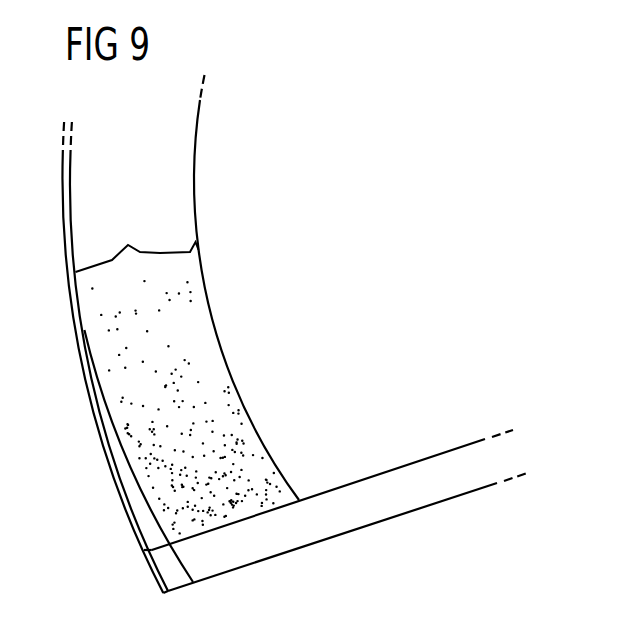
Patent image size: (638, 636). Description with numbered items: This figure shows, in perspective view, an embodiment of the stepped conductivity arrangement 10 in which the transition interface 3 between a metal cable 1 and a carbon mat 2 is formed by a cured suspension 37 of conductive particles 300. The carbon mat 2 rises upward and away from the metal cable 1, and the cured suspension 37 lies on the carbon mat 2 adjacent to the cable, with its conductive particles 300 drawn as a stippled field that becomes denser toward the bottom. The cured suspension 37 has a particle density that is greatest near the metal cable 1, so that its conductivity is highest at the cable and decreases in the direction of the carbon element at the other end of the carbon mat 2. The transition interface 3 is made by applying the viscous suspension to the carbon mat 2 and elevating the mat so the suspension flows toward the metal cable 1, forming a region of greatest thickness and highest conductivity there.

The stepped conductivity arrangement 10 is at (298, 258).
The carbon mat 2 is at (180, 203).
The transition interface 3 is at (245, 402).
The cured suspension 37 is at (217, 357).
The conductive particles 300 is at (170, 517).
The metal cable 1 is at (381, 473).